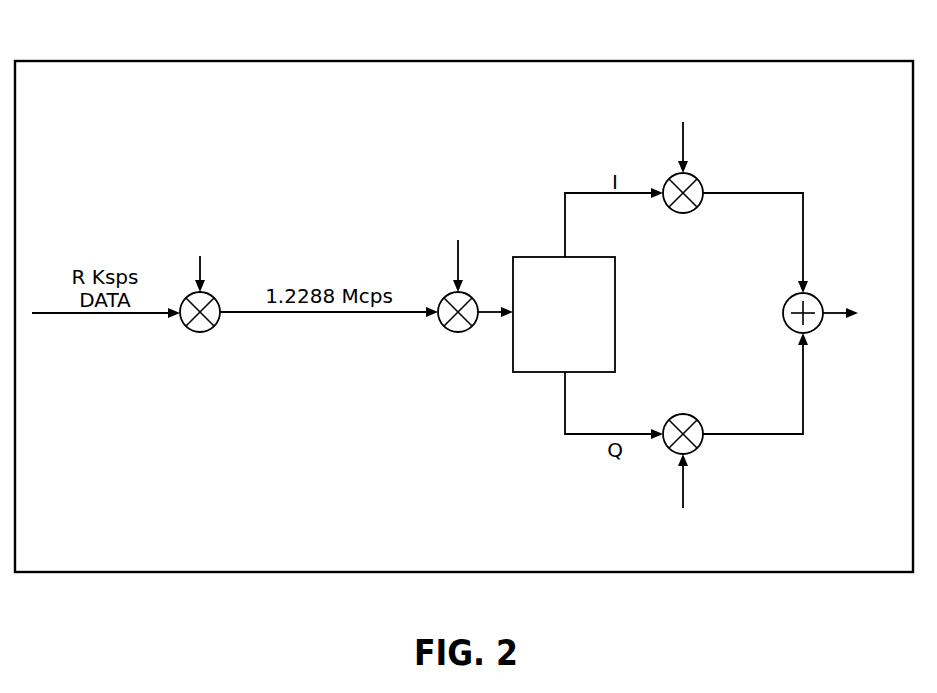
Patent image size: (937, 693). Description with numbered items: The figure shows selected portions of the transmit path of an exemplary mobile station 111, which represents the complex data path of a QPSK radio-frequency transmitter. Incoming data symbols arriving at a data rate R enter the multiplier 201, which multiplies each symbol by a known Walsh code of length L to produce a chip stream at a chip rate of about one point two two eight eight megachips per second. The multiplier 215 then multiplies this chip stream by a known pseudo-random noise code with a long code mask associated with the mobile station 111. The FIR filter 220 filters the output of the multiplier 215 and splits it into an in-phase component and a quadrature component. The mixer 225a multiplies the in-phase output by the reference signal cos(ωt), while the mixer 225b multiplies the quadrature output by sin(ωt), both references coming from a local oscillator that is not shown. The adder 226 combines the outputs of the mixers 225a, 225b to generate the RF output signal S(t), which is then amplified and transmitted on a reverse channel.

The mobile station 111 is at (440, 60).
The multiplier 201 is at (200, 333).
The multiplier 215 is at (458, 333).
The finite impulse response (FIR) filter 220 is at (533, 372).
The mixer 225a is at (683, 213).
The mixer 225b is at (683, 414).
The adder 226 is at (783, 313).